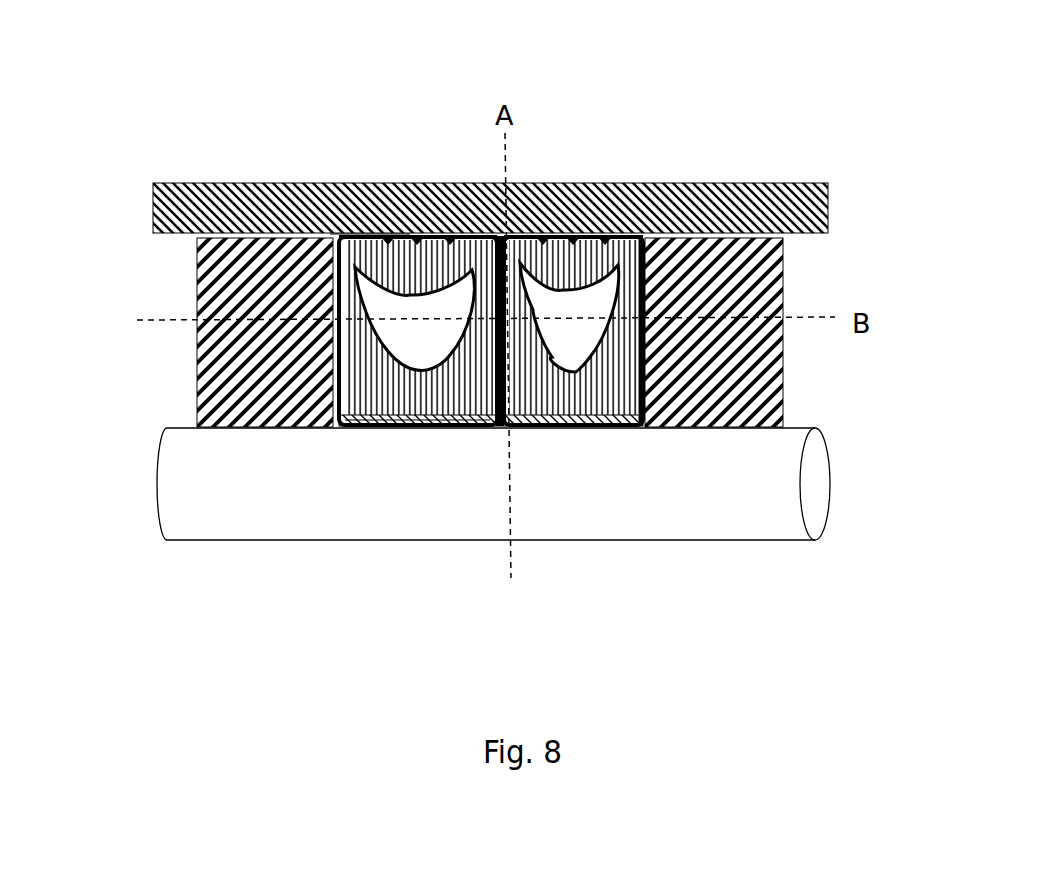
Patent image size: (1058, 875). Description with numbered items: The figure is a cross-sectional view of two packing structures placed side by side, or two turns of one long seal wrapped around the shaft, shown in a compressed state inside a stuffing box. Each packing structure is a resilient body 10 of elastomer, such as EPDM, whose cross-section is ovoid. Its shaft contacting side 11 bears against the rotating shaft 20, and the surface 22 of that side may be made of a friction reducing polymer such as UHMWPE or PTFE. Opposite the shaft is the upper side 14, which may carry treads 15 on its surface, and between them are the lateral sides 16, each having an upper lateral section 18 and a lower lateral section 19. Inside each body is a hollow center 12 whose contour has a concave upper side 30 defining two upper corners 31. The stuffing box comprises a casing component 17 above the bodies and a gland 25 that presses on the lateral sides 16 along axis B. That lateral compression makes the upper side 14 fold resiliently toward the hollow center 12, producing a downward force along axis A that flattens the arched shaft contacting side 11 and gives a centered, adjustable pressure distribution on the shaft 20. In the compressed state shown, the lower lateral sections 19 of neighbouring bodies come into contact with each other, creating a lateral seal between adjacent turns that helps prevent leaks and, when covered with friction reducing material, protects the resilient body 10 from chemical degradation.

The resilient body 10 is at (590, 387).
The shaft contacting side 11 is at (608, 427).
The hollow center 12 is at (615, 240).
The upper side 14 is at (563, 233).
The treads 15 is at (452, 232).
The lateral sides 16 is at (333, 328).
The casing component 17 is at (230, 203).
The upper lateral section 18 is at (652, 235).
The lower lateral section 19 is at (350, 418).
The shaft 20 is at (255, 502).
The surface of the shaft contacting side 22 is at (403, 425).
The gland 25 is at (740, 303).
The concave upper side 30 is at (410, 215).
The upper corners 31 is at (356, 267).